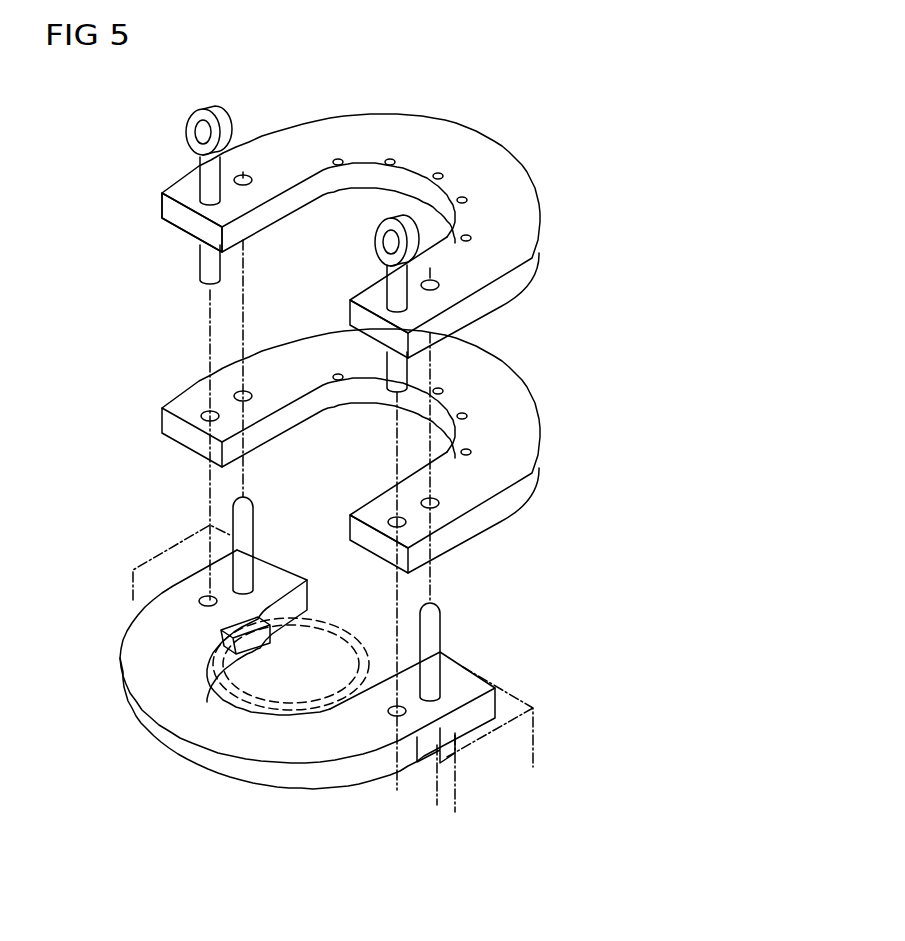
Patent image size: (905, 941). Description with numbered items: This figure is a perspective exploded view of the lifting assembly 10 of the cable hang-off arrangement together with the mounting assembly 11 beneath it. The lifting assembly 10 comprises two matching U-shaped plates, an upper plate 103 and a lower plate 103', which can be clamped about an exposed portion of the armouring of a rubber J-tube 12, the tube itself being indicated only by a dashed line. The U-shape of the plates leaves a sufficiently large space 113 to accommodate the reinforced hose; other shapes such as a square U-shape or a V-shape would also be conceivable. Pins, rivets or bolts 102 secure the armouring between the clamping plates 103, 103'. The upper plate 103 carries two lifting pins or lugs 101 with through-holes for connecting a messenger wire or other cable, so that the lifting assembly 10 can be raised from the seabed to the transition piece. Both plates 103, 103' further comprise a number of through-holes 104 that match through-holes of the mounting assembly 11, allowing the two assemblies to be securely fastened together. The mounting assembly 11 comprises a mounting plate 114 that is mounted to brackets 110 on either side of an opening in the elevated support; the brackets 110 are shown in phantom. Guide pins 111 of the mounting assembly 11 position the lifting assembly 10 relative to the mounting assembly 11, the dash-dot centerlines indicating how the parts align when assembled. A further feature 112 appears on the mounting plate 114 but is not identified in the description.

The lifting assembly 10 is at (136, 176).
The lifting pins or lugs 101 is at (188, 130).
The pins, rivets or bolts 102 is at (463, 197).
The upper U-shaped plate 103 is at (380, 224).
The lower U-shaped plate 103' is at (383, 451).
The through-holes 104 is at (245, 176).
The space 113 is at (236, 233).
The mounting assembly 11 is at (112, 608).
The brackets 110 is at (517, 707).
The guide pins 111 is at (254, 528).
The bores 112 is at (207, 595).
The mounting plate 114 is at (130, 662).
The rubber J-tube 12 is at (360, 637).